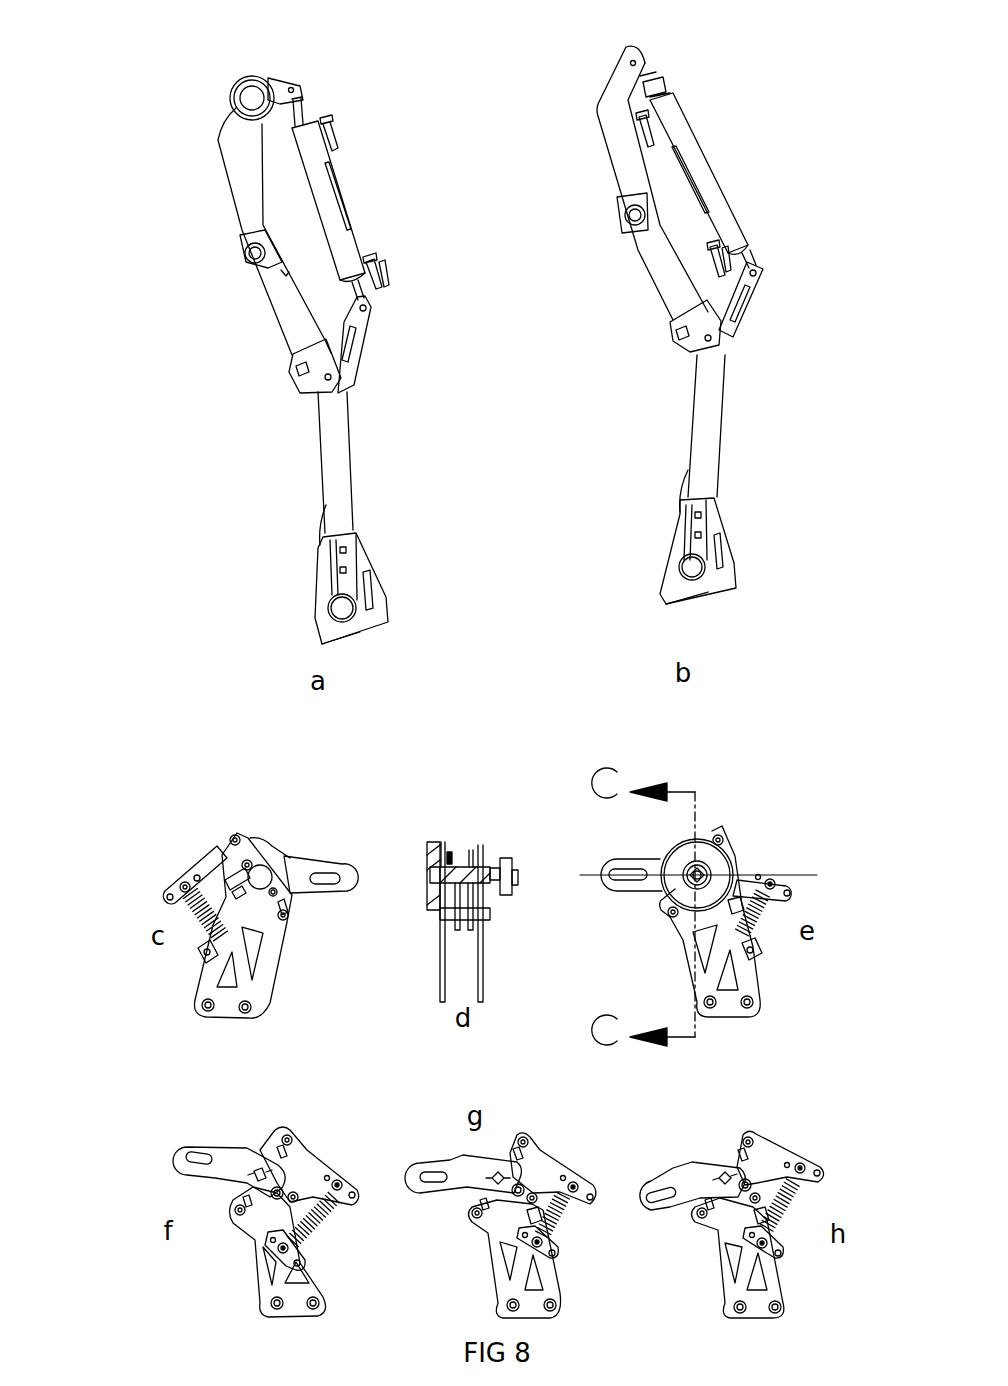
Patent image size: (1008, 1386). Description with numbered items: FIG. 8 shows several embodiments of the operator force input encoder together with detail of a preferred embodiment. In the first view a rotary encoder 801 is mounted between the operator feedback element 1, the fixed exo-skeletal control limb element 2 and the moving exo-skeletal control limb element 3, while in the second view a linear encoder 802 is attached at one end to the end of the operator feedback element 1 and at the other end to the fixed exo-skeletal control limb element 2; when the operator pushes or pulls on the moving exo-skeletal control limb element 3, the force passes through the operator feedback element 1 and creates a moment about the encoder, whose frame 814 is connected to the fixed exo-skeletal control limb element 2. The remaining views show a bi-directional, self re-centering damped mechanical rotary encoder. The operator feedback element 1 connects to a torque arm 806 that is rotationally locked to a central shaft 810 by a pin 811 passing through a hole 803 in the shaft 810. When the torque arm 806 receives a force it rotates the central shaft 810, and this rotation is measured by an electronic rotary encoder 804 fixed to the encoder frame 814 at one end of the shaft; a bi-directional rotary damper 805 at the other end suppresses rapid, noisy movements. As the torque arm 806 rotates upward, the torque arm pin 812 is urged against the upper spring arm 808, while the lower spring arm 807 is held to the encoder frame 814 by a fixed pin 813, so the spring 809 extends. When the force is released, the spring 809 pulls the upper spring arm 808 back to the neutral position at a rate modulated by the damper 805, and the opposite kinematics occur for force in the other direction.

The operator feedback element 1 is at (329, 203).
The fixed exo-skeletal control limb element 2 is at (290, 312).
The moving exo-skeletal control limb element 3 is at (337, 477).
The upper pivot ring 801 is at (266, 77).
The cylinder upper joint 802 is at (670, 75).
The hole 803 is at (450, 862).
The electronic rotary encoder 804 is at (237, 877).
The bi-directional rotary damper 805 is at (713, 860).
The torque arm 806 is at (170, 1150).
The lower spring arm 807 is at (255, 1227).
The upper spring arm 808 is at (305, 1168).
The spring 809 is at (330, 1228).
The central shaft 810 is at (258, 1170).
The pin 811 is at (752, 1166).
The torque arm pin 812 is at (523, 1173).
The fixed pin 813 is at (545, 1187).
The encoder frame 814 is at (252, 992).